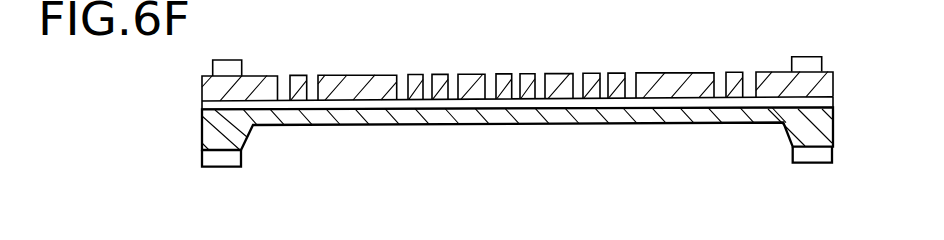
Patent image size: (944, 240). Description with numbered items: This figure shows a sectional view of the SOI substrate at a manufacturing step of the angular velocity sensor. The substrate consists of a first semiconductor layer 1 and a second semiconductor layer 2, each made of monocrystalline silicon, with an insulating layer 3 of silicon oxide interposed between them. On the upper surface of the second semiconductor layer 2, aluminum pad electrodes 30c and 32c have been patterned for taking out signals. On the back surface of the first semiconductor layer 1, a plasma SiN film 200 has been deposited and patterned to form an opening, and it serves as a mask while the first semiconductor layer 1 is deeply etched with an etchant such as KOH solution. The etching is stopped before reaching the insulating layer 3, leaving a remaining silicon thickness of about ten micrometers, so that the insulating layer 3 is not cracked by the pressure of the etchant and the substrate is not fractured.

The first semiconductor layer 1 is at (821, 137).
The second semiconductor layer 2 is at (833, 89).
The insulating layer 3 is at (823, 104).
The pad electrode 32c is at (228, 59).
The pad electrode 30c is at (806, 56).
The plasma SiN film 200 is at (816, 195).